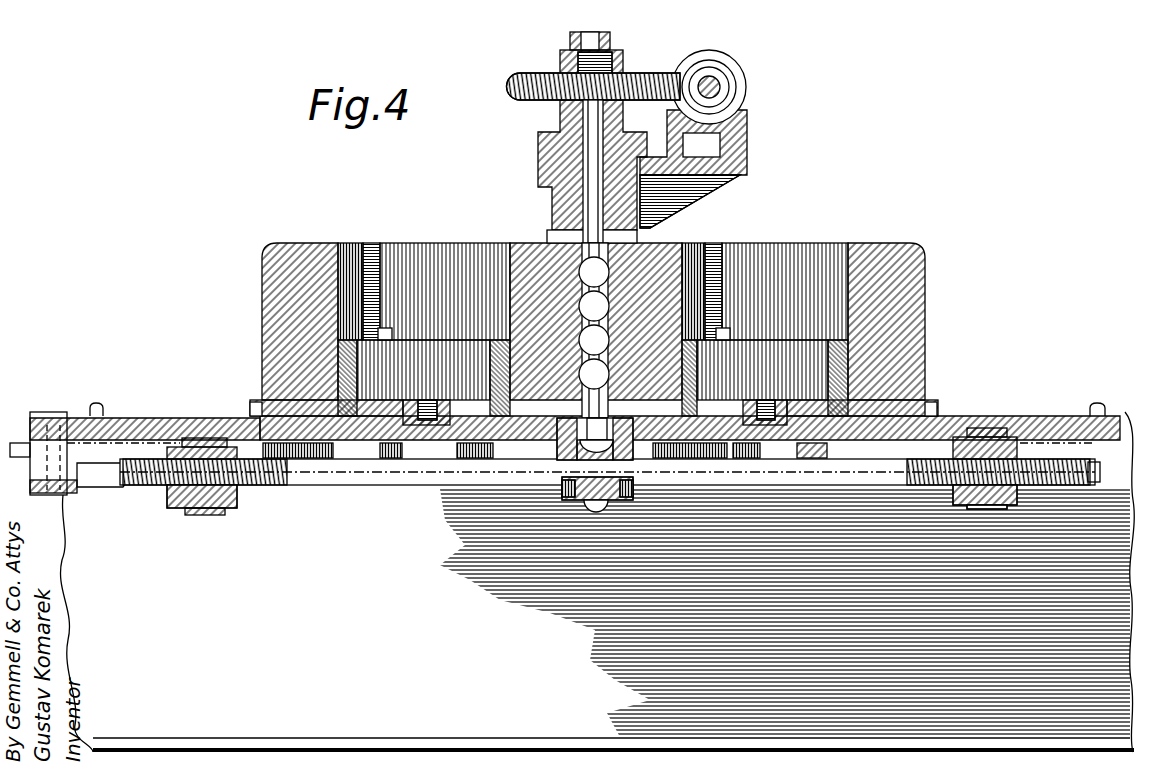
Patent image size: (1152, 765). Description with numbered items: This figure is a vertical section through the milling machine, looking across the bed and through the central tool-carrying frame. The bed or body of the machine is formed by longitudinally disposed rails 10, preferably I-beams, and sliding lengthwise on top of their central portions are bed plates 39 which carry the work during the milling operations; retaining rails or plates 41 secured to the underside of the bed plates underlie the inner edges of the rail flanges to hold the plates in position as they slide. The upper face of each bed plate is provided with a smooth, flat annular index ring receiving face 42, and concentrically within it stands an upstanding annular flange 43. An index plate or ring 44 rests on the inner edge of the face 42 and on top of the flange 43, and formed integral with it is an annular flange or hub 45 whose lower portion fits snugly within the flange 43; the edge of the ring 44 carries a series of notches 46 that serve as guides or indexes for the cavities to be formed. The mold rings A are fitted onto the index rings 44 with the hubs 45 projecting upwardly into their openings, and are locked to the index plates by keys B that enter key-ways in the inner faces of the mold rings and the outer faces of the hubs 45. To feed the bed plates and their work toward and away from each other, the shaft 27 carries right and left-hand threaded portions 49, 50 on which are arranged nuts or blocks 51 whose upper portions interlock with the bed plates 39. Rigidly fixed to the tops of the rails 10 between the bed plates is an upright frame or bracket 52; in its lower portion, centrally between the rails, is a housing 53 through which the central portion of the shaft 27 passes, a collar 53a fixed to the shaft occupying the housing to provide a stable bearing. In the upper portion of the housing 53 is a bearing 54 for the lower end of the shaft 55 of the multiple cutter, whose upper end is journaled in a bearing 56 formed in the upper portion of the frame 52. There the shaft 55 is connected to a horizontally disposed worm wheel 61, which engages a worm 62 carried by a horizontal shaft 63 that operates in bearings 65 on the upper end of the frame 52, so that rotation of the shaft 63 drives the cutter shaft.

The rails 10 is at (540, 240).
The shaft 27 is at (355, 480).
The bed plates 39 is at (124, 412).
The retaining rails or plates 41 is at (62, 492).
The annular index ring receiving faces 42 is at (218, 418).
The upstanding annular flange 43 is at (330, 412).
The index plate or ring 44 is at (325, 405).
The annular flange or hub 45 is at (963, 333).
The notches 46 is at (260, 404).
The right-hand threaded portion 49 is at (160, 487).
The left-hand threaded portion 50 is at (1047, 458).
The nuts or blocks 51 is at (205, 500).
The upright frame or bracket 52 is at (672, 199).
The housing 53 is at (563, 492).
The collar 53a is at (580, 504).
The bearing 54 is at (565, 450).
The shaft of the multiple cutter or milling tool 55 is at (588, 240).
The bearing 56 is at (540, 148).
The worm wheel 61 is at (633, 72).
The worm 62 is at (730, 86).
The shaft 63 is at (712, 80).
The bearings 65 is at (742, 166).
The mold rings A is at (292, 246).
The keys B is at (390, 333).